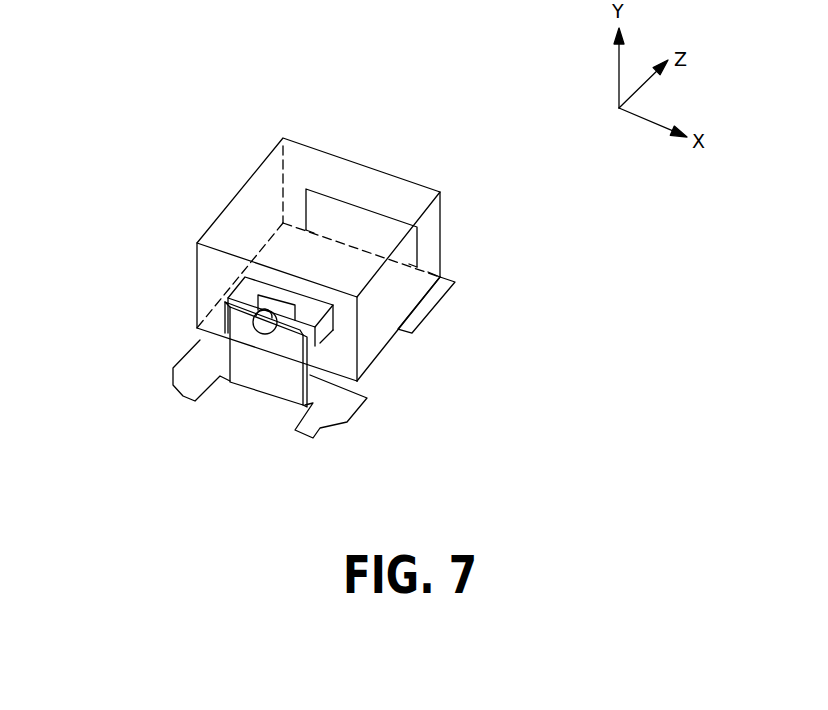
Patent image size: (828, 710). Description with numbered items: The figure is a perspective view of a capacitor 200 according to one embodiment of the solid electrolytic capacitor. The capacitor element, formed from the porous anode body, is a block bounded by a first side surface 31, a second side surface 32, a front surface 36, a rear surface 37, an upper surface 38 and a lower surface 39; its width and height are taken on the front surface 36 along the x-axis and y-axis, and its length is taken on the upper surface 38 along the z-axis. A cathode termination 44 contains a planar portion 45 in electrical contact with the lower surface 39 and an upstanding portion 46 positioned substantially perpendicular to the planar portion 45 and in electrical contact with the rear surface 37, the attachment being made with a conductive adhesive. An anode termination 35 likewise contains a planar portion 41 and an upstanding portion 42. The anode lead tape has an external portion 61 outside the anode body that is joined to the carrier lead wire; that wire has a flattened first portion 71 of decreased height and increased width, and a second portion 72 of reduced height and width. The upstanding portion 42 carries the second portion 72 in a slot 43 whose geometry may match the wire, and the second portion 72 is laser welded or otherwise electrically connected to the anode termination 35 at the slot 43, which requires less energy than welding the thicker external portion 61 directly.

The capacitor 200 is at (132, 83).
The first side surface 31 is at (396, 293).
The second side surface 32 is at (245, 231).
The anode termination 35 is at (189, 385).
The front surface 36 is at (226, 271).
The rear surface 37 is at (386, 200).
The upper surface 38 is at (269, 200).
The lower surface 39 is at (370, 352).
The planar portion 41 is at (333, 406).
The upstanding portion 42 is at (229, 369).
The slot 43 is at (265, 334).
The cathode termination 44 is at (478, 258).
The planar portion 45 is at (418, 307).
The upstanding portion 46 is at (338, 224).
The external portion 61 is at (250, 291).
The first portion 71 is at (333, 325).
The second portion 72 is at (200, 340).